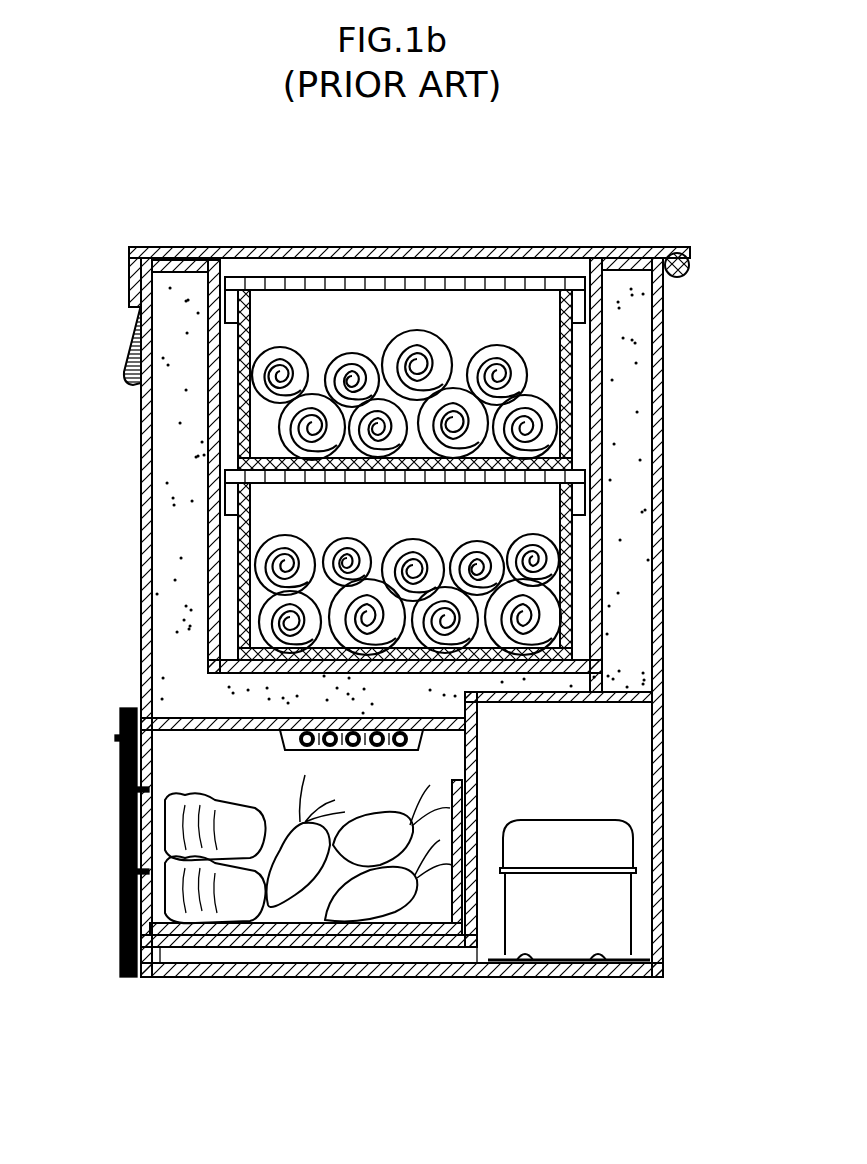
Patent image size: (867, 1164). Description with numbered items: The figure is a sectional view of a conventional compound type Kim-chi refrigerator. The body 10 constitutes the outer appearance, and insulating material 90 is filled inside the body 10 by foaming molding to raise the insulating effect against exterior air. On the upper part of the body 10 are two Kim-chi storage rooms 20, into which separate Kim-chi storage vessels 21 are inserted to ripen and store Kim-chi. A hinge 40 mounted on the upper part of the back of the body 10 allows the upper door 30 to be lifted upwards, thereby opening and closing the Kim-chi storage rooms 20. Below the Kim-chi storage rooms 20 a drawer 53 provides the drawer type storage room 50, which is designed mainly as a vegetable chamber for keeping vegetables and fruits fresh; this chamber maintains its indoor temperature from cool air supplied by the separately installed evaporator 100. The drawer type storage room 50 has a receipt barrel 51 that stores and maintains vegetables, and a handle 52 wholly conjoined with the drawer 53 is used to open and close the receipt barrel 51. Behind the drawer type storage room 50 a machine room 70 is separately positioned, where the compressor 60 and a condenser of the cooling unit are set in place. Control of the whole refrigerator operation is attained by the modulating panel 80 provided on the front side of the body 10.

The body 10 is at (663, 362).
The Kim-chi storage room 20 is at (228, 337).
The Kim-chi storage vessel 21 is at (565, 557).
The upper door 30 is at (395, 250).
The hinge 40 is at (690, 262).
The drawer type storage room 50 is at (280, 797).
The receipt barrel 51 is at (308, 928).
The handle 52 is at (116, 738).
The drawer 53 is at (120, 830).
The compressor 60 is at (625, 908).
The machine room 70 is at (607, 786).
The modulating panel 80 is at (124, 380).
The insulating material 90 is at (635, 572).
The evaporator 100 is at (275, 725).